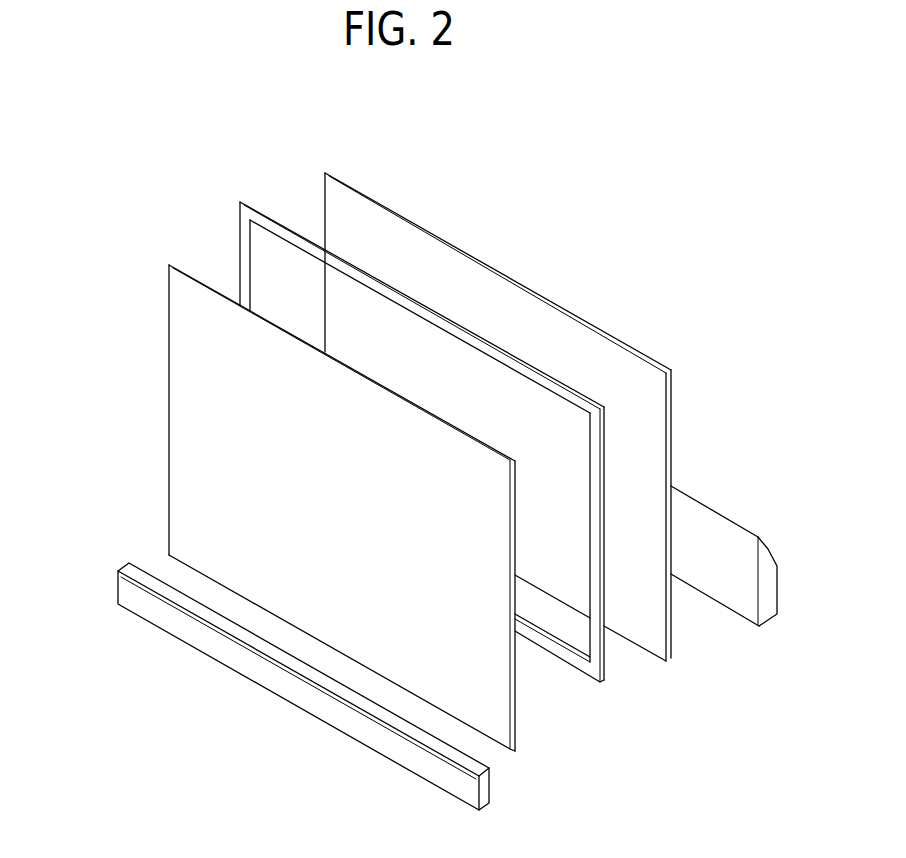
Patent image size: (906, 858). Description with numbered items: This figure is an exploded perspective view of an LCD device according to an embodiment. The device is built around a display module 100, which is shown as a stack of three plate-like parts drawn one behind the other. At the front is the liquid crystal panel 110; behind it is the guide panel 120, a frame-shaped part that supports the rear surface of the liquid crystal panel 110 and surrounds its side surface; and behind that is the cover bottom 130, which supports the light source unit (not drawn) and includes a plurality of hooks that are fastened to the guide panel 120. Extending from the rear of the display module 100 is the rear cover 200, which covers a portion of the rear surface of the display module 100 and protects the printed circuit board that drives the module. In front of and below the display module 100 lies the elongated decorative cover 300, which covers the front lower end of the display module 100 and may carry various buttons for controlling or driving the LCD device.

The display module 100 is at (150, 188).
The liquid crystal panel 110 is at (188, 273).
The guide panel 120 is at (256, 208).
The cover bottom 130 is at (328, 173).
The rear cover 200 is at (722, 530).
The decorative cover 300 is at (118, 598).